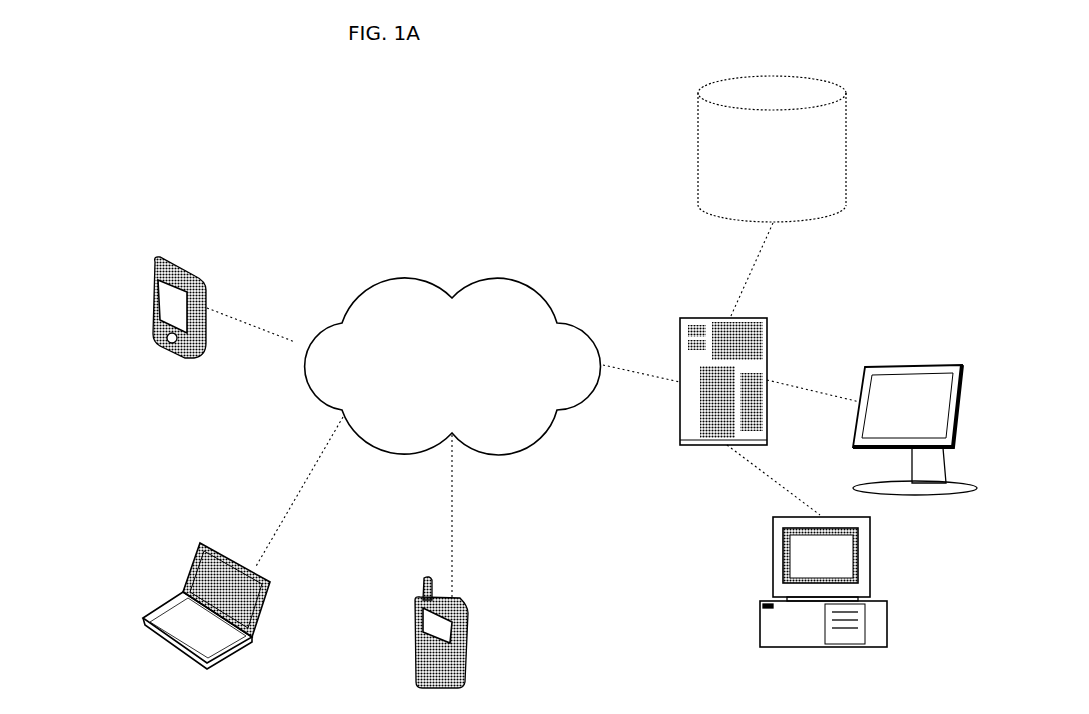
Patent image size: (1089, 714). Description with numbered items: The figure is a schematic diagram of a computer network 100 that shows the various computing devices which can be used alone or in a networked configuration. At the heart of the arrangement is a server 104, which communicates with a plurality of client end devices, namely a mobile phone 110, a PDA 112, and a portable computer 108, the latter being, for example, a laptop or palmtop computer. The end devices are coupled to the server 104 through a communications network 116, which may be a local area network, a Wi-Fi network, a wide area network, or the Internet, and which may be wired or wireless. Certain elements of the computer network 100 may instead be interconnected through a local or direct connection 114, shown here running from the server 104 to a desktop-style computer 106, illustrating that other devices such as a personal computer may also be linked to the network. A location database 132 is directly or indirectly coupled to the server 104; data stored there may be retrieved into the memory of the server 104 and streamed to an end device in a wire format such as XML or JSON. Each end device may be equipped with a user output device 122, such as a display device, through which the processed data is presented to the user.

The computer network 100 is at (376, 71).
The server 104 is at (680, 335).
The desktop computer 106 is at (760, 606).
The portable computer 108 is at (142, 618).
The mobile phone 110 is at (471, 640).
The PDA 112 is at (151, 318).
The local or direct connection 114 is at (767, 478).
The communications network 116 is at (403, 277).
The user output device 122 is at (965, 424).
The location database 132 is at (847, 108).